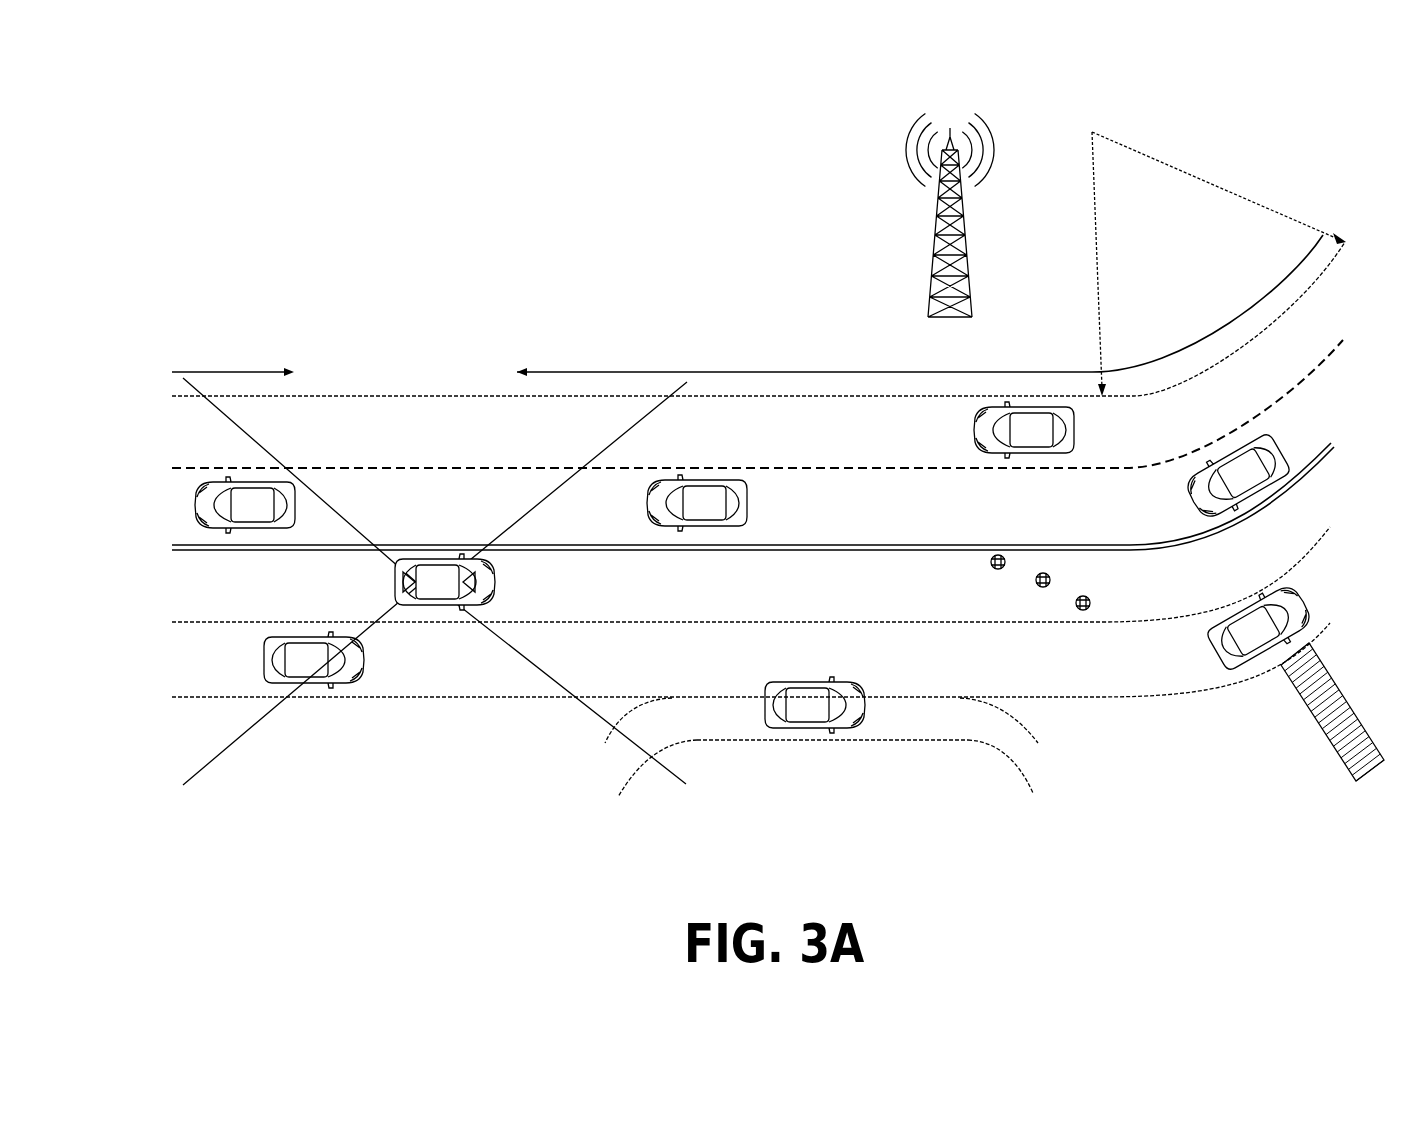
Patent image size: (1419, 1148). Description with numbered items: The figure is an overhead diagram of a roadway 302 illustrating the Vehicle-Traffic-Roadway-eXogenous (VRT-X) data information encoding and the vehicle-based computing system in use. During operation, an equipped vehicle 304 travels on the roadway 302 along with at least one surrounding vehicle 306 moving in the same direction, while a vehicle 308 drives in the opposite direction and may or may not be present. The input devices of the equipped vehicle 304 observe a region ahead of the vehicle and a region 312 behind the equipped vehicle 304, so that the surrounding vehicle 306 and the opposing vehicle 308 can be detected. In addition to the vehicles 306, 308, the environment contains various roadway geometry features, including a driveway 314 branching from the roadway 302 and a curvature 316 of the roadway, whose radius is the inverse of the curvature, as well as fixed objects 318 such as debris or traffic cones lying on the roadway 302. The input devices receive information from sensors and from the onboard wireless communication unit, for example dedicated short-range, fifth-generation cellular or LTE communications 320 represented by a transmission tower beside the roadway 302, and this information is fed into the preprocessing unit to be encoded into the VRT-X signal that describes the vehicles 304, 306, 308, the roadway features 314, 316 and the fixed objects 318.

The roadway 302 is at (362, 417).
The equipped vehicle 304 is at (492, 583).
The surrounding vehicle 306 is at (365, 660).
The vehicle 308 is at (203, 505).
The region 312 is at (360, 532).
The driveway 314 is at (1300, 693).
The curvature 316 is at (1250, 174).
The fixed objects 318 is at (1126, 592).
The DSRC/5G/LTE communications 320 is at (950, 120).